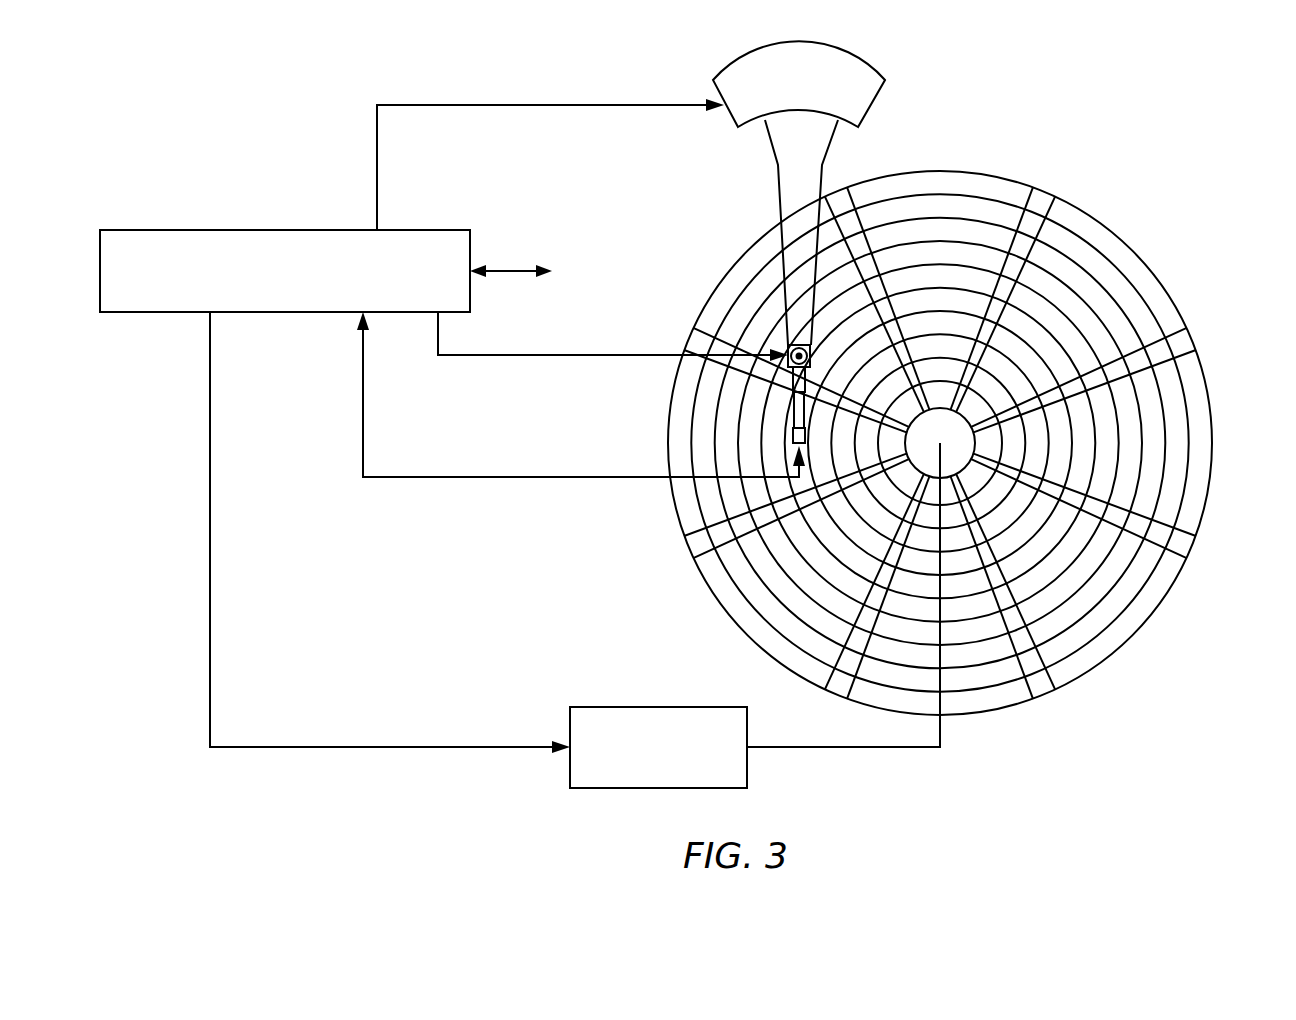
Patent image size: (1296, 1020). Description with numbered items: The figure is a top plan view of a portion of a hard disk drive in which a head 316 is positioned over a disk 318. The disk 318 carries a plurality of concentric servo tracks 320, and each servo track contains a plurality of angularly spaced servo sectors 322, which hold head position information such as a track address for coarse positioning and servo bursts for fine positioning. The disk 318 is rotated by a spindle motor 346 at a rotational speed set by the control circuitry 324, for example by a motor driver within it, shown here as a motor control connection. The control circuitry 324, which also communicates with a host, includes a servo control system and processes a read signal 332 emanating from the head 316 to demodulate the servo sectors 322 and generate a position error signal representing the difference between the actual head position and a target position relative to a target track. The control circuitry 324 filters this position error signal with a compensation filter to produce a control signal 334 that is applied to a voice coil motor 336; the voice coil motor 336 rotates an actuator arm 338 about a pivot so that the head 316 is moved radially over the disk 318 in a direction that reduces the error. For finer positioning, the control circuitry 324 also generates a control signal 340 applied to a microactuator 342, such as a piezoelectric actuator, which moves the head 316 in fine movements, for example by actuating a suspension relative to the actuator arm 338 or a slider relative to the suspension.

The head 316 is at (775, 436).
The disk 318 is at (1150, 222).
The servo tracks 320 is at (923, 207).
The servo sectors 322 is at (1046, 207).
The control circuitry 324 is at (437, 230).
The read signal 332 is at (533, 477).
The control signal 334 is at (377, 160).
The voice coil motor 336 is at (735, 120).
The actuator arm 338 is at (780, 215).
The control signal 340 is at (578, 355).
The microactuator 342 is at (780, 335).
The spindle motor 346 is at (640, 707).